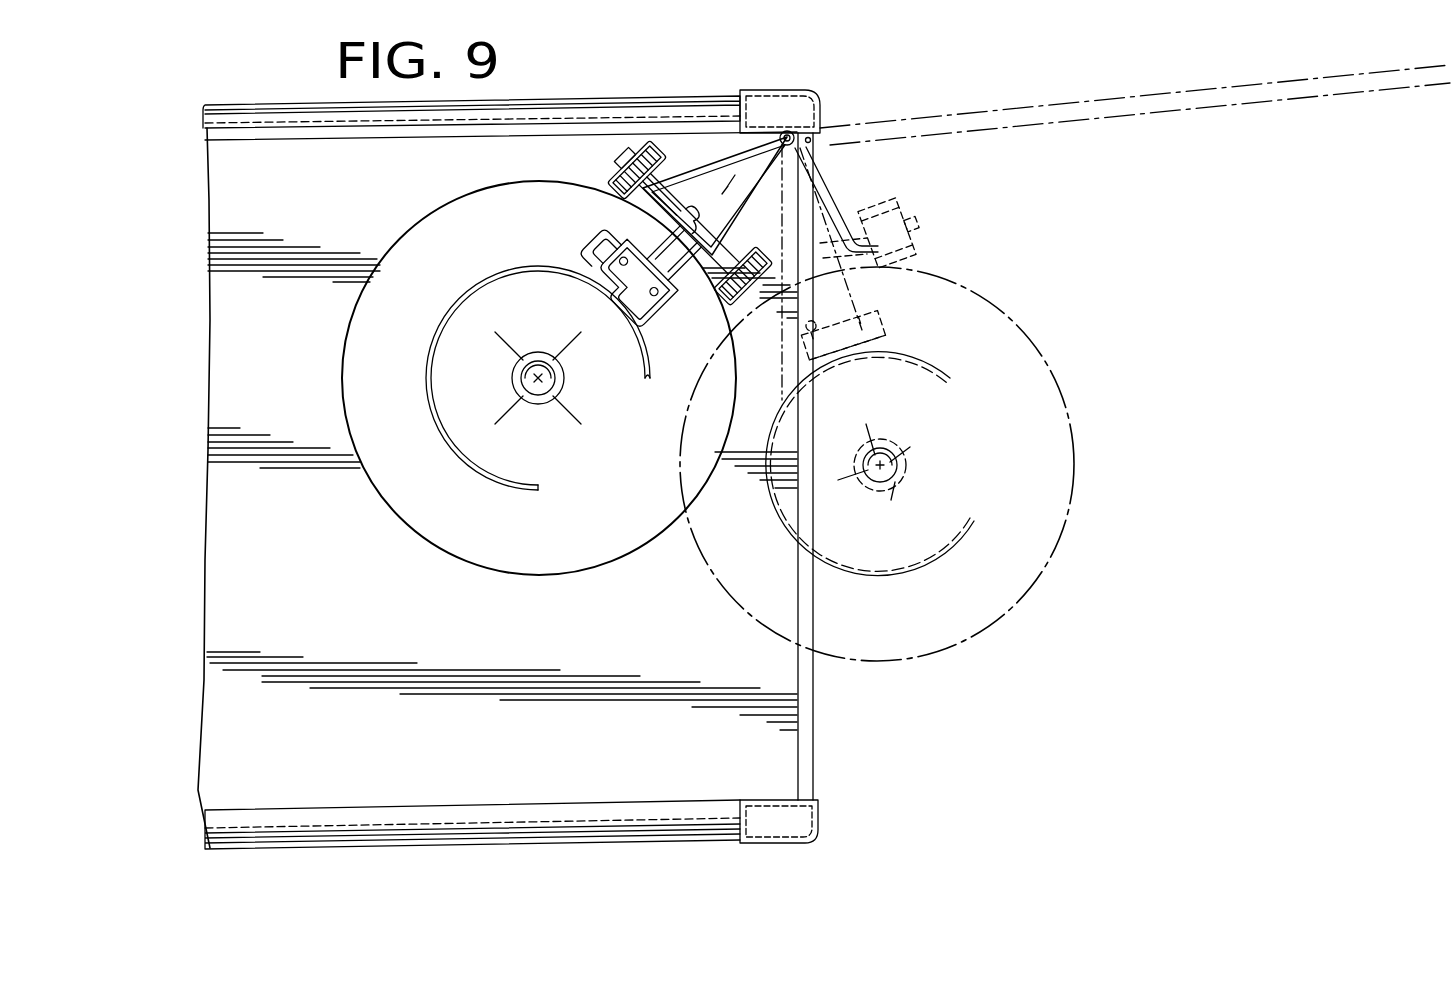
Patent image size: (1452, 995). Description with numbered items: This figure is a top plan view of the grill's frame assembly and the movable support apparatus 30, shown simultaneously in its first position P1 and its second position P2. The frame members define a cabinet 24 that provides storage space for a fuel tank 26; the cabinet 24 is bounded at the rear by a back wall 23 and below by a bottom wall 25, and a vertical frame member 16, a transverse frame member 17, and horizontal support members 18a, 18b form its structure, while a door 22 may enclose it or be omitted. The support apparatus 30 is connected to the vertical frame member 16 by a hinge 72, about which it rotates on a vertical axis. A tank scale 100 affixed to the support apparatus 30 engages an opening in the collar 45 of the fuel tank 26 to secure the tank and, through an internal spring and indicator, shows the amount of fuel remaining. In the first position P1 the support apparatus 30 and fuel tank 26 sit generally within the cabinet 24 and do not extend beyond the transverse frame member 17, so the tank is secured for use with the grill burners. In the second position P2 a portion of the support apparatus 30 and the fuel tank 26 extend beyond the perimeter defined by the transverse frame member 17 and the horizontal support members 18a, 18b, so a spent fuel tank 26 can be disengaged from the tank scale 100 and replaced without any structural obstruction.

The vertical frame member 16 is at (793, 108).
The transverse frame member 17 is at (805, 768).
The horizontal support member 18a is at (578, 104).
The horizontal support member 18b is at (575, 842).
The door 22 is at (458, 826).
The back wall 23 is at (522, 112).
The cabinet 24 is at (300, 606).
The bottom wall 25 is at (245, 768).
The fuel tank 26 is at (605, 545).
The support apparatus 30 is at (672, 172).
The collar 45 is at (496, 282).
The hinge 72 is at (723, 160).
The tank scale 100 is at (695, 272).
The first position P1 is at (310, 352).
The second position P2 is at (1095, 318).